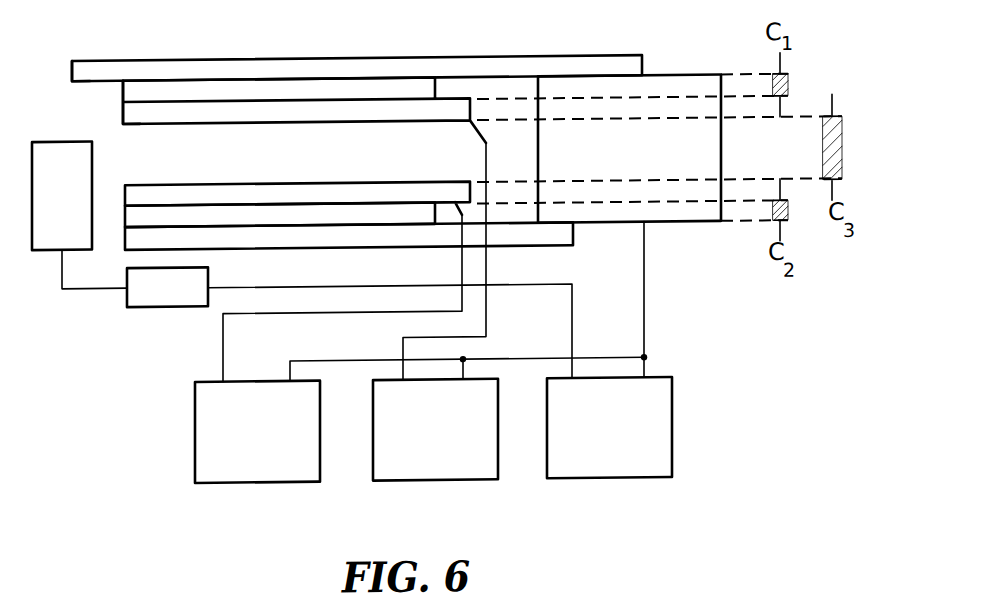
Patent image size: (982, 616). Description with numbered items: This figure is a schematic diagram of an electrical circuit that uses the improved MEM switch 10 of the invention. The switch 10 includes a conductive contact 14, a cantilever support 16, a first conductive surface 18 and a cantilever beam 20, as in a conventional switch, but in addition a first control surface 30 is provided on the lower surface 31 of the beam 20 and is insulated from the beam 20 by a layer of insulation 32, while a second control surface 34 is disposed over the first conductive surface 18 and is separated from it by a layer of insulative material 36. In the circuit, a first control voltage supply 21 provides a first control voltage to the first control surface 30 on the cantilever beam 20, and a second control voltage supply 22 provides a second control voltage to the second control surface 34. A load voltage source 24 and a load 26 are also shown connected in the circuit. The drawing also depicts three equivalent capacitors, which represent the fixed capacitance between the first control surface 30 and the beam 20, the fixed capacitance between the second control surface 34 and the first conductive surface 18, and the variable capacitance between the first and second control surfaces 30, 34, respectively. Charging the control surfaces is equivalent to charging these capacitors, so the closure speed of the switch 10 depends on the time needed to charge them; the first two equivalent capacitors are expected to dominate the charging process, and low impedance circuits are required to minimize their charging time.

The improved switch 10 is at (132, 463).
The conductive contact 14 is at (55, 238).
The cantilever support 16 is at (690, 97).
The first conductive surface 18 is at (552, 243).
The cantilever beam 20 is at (442, 72).
The first control voltage supply 21 is at (418, 484).
The second control voltage supply 22 is at (248, 486).
The load voltage source V1 24 is at (588, 484).
The load 26 is at (177, 310).
The first control surface 30 is at (192, 126).
The lower surface 31 is at (82, 86).
The layer of insulation 32 is at (122, 98).
The second control surface 34 is at (283, 185).
The layer of insulative material 36 is at (125, 219).